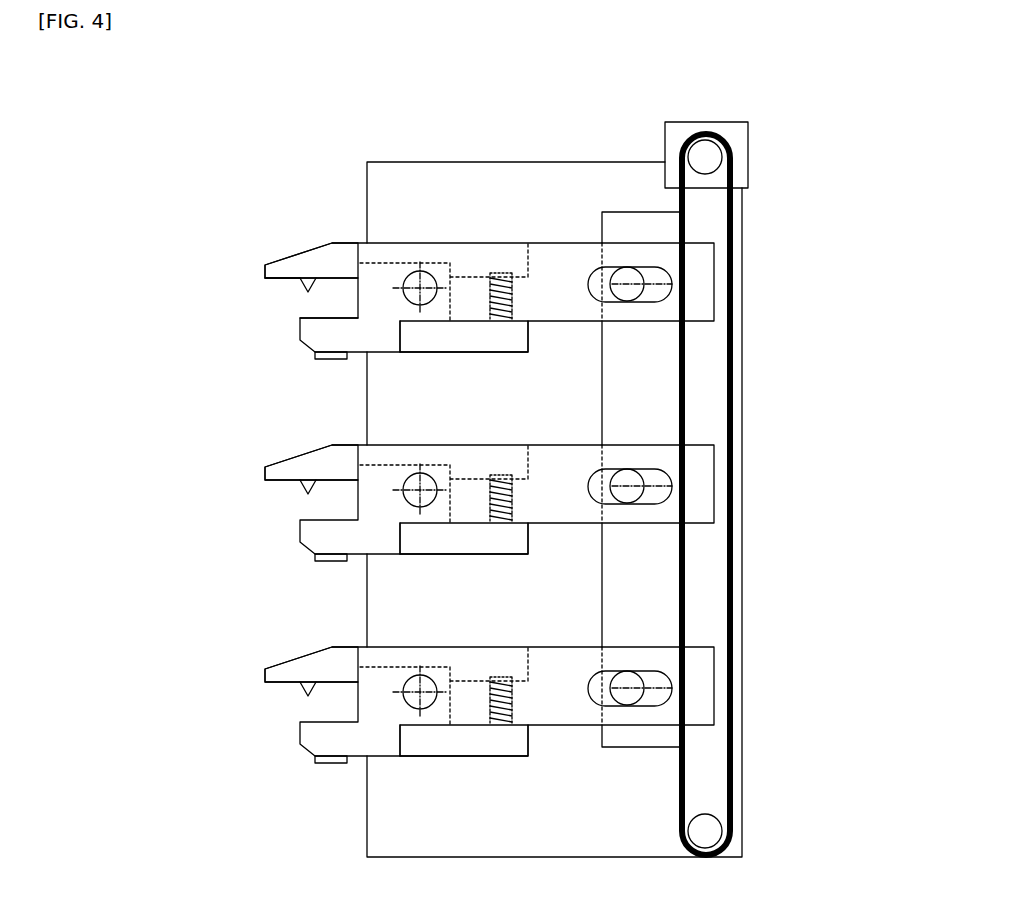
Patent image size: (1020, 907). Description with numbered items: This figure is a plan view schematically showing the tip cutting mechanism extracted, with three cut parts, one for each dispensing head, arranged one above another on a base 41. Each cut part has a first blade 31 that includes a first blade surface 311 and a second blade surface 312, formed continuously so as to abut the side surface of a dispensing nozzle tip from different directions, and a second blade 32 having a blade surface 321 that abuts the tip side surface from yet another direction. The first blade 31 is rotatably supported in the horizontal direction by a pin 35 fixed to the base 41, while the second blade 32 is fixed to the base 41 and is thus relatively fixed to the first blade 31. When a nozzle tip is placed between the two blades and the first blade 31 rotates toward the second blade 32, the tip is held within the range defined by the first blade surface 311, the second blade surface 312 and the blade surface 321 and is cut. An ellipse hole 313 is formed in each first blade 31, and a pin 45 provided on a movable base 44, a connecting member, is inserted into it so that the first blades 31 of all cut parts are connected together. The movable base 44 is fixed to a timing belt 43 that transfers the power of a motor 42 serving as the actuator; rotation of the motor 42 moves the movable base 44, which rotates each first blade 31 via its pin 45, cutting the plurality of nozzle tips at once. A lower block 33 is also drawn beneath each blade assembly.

The first blade 31 is at (307, 332).
The first blade surface 311 is at (318, 318).
The second blade surface 312 is at (293, 291).
The second blade 32 is at (292, 258).
The blade surface 321 is at (313, 278).
The lower block 33 is at (450, 342).
The pin 35 is at (417, 271).
The ellipse hole 313 is at (598, 282).
The base 41 is at (485, 177).
The motor 42 is at (734, 130).
The timing belt 43 is at (734, 395).
The movable base 44 is at (660, 590).
The pin 45 is at (680, 288).